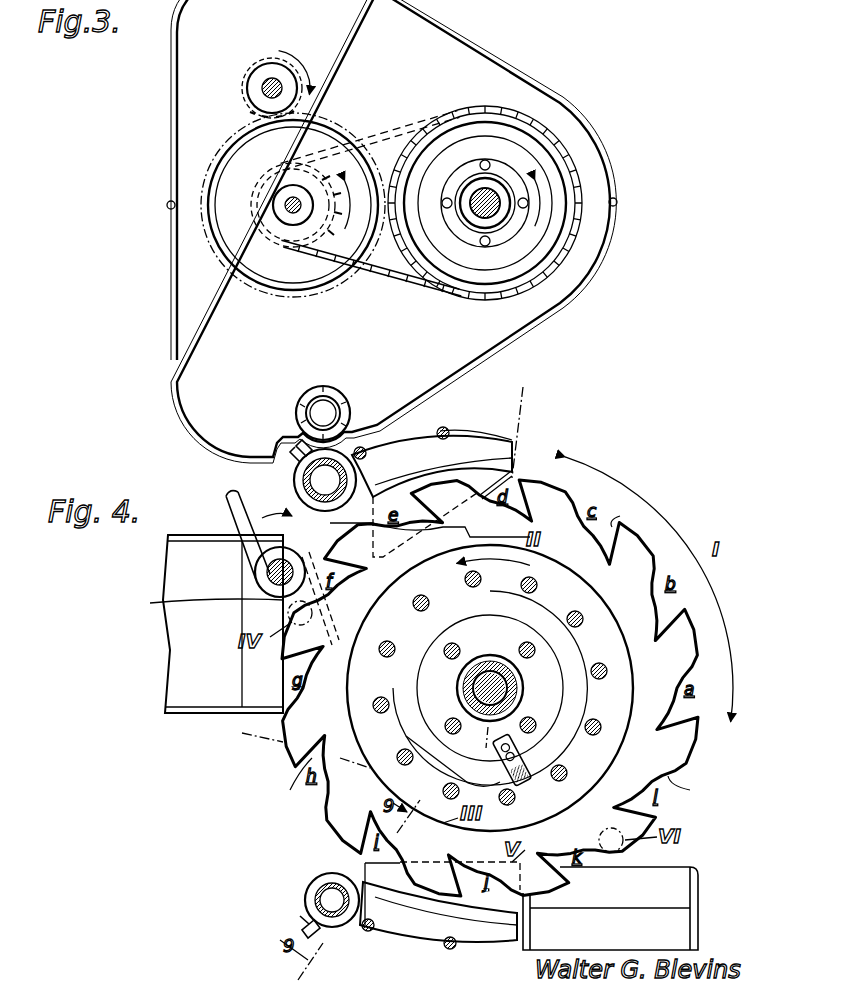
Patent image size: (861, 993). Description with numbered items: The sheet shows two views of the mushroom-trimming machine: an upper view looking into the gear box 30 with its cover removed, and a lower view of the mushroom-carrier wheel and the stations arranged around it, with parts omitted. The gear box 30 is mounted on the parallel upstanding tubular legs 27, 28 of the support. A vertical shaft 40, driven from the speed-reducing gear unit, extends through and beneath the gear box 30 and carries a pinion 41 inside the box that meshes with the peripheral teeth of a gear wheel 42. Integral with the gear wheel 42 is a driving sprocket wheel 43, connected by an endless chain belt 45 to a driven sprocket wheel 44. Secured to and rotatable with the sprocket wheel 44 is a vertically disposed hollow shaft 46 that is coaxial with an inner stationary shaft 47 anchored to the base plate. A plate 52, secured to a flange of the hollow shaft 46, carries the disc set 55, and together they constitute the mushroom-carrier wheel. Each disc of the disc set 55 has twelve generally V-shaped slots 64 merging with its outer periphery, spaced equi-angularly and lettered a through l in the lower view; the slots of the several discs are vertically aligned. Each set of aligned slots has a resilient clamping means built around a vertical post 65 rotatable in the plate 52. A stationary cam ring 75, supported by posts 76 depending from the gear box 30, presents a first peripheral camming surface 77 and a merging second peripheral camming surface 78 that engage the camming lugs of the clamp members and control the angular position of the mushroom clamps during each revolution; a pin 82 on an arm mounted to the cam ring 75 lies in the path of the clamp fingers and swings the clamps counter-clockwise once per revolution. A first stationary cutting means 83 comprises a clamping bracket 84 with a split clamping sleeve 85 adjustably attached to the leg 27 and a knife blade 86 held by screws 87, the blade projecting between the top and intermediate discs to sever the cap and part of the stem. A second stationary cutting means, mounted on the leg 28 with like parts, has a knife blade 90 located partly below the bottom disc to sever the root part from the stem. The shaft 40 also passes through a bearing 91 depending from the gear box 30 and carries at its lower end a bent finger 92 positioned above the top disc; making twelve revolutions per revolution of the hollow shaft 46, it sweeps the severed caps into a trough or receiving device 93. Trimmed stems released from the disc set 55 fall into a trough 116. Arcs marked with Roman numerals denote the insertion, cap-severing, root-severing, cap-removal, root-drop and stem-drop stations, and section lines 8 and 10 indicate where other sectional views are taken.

In FIG. 3, the gear box 30 is at (168, 233).
In FIG. 3, the tubular leg 28 is at (348, 402).
In FIG. 4, the tubular leg 28 is at (306, 893).
In FIG. 4, the tubular leg 27 is at (298, 470).
In FIG. 3, the vertical shaft 40 is at (268, 84).
In FIG. 4, the vertical shaft 40 is at (284, 558).
In FIG. 3, the pinion 41 is at (250, 86).
In FIG. 3, the gear wheel 42 is at (240, 141).
In FIG. 3, the driving sprocket wheel 43 is at (283, 228).
In FIG. 3, the driven sprocket wheel 44 is at (440, 277).
In FIG. 3, the endless chain belt 45 is at (381, 272).
In FIG. 3, the hollow shaft 46 is at (458, 198).
In FIG. 4, the hollow shaft 46 is at (522, 685).
In FIG. 3, the stationary shaft 47 is at (472, 195).
In FIG. 4, the stationary shaft 47 is at (490, 660).
In FIG. 4, the plate 52 is at (352, 698).
In FIG. 4, the disc set 55 is at (700, 750).
In FIG. 4, the V-shaped slots 64 is at (492, 653).
In FIG. 4, the vertical post 65 is at (405, 606).
In FIG. 4, the stationary cam ring 75 is at (424, 714).
In FIG. 4, the posts 76 is at (449, 720).
In FIG. 4, the first peripheral camming surface 77 is at (418, 680).
In FIG. 4, the second peripheral camming surface 78 is at (590, 690).
In FIG. 4, the pin 82 is at (528, 778).
In FIG. 4, the first stationary cutting means 83 is at (467, 432).
In FIG. 4, the clamping bracket 84 is at (436, 452).
In FIG. 4, the split clamping sleeve 85 is at (296, 486).
In FIG. 4, the knife blade 86 is at (485, 485).
In FIG. 4, the screws 87 is at (447, 426).
In FIG. 4, the knife blade 90 is at (370, 872).
In FIG. 4, the bearing 91 is at (152, 604).
In FIG. 4, the bent finger 92 is at (232, 520).
In FIG. 4, the trough or receiving device 93 is at (178, 686).
In FIG. 4, the trough 116 is at (690, 893).
In FIG. 4, the section line 8 is at (547, 399).
In FIG. 4, the section line 10 is at (357, 766).